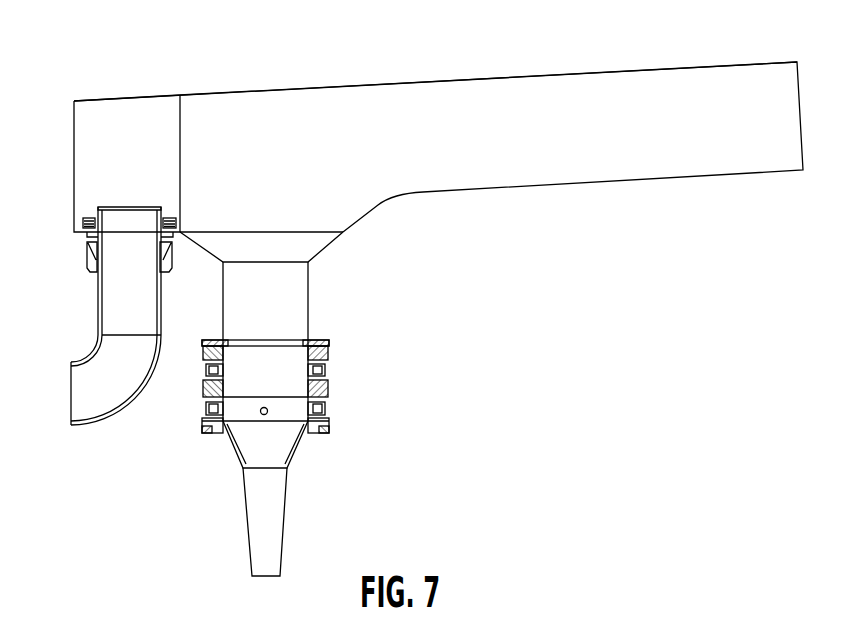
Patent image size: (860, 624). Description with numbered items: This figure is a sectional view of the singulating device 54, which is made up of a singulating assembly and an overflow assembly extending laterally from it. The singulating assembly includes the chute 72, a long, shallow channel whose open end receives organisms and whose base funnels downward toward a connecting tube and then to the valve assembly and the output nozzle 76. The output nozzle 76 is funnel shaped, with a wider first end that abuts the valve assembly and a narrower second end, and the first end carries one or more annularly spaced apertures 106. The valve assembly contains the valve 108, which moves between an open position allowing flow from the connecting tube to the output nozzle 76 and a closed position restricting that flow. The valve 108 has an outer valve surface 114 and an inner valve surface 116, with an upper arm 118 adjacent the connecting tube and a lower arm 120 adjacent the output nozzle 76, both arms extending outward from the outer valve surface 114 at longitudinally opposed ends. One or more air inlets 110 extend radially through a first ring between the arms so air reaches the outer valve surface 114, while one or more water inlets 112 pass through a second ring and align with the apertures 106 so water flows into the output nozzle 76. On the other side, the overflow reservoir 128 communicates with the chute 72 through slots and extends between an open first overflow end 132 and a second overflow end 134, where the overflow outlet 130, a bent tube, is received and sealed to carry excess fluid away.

The singulating device 54 is at (160, 40).
The chute 72 is at (607, 167).
The output nozzle 76 is at (277, 510).
The aperture 106 is at (268, 415).
The valve 108 is at (282, 343).
The air inlet 110 is at (328, 370).
The water inlet 112 is at (328, 408).
The outer valve surface 114 is at (207, 377).
The inner valve surface 116 is at (223, 360).
The upper arm 118 is at (330, 347).
The lower arm 120 is at (203, 397).
The overflow reservoir 128 is at (87, 155).
The overflow outlet 130 is at (110, 372).
The first overflow end 132 is at (105, 98).
The second overflow end 134 is at (82, 233).